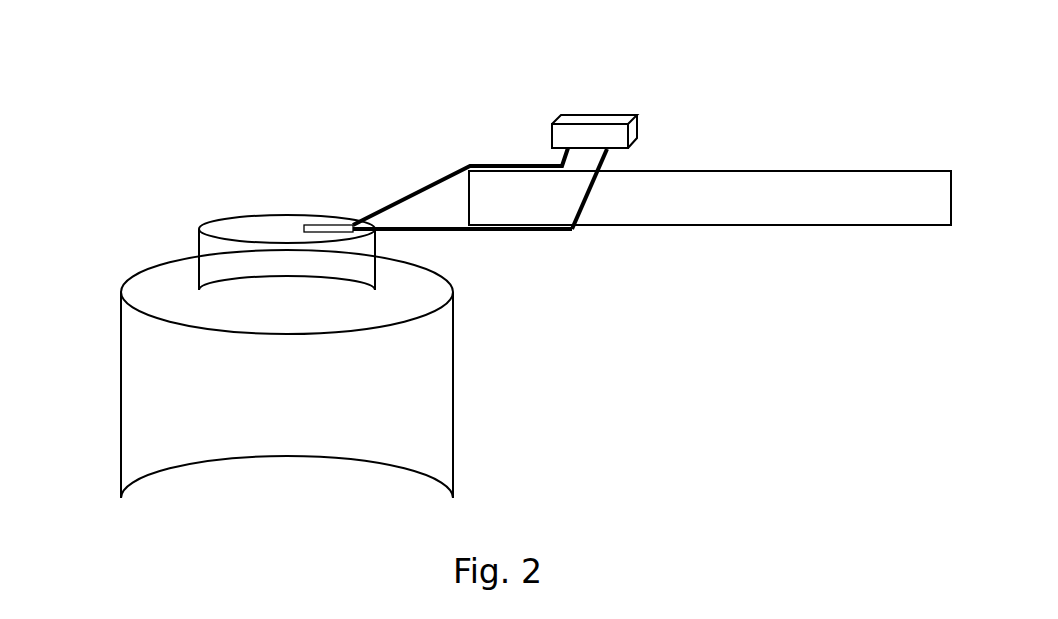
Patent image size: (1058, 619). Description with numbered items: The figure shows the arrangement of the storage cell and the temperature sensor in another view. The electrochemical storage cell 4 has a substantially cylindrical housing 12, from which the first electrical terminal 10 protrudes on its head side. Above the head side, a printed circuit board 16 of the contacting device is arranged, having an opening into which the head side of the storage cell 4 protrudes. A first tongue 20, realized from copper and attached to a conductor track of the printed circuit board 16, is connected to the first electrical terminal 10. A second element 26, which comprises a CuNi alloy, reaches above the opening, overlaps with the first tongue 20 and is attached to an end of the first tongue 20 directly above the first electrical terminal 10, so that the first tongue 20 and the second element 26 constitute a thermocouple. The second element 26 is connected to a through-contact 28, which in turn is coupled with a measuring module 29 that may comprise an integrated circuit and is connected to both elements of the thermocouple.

The electrochemical storage cell 4 is at (145, 377).
The first electrical terminal 10 is at (212, 250).
The housing 12 is at (247, 330).
The printed circuit board 16 is at (842, 127).
The first tongue 20 is at (480, 232).
The second element 26 is at (393, 198).
The through-contact 28 is at (588, 205).
The measuring module 29 is at (633, 130).